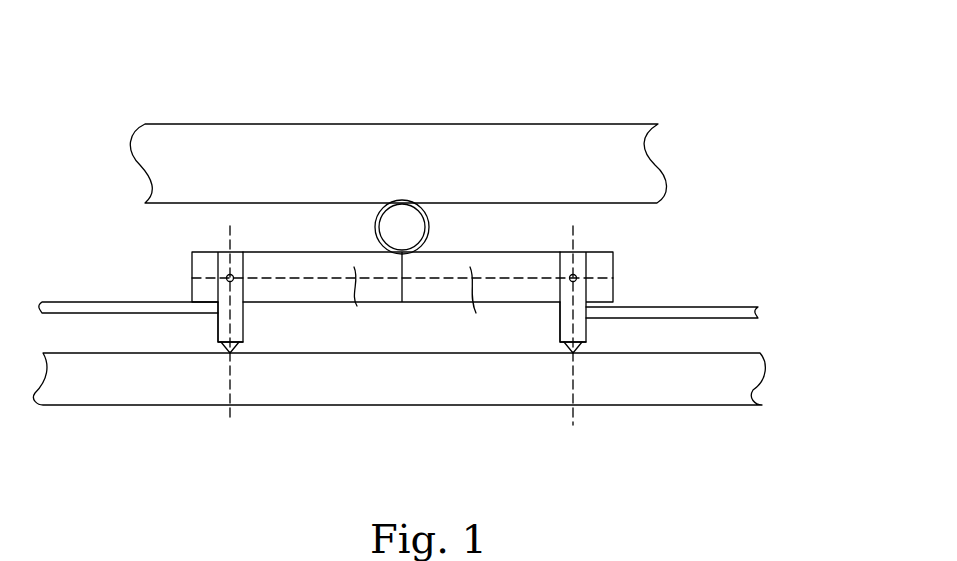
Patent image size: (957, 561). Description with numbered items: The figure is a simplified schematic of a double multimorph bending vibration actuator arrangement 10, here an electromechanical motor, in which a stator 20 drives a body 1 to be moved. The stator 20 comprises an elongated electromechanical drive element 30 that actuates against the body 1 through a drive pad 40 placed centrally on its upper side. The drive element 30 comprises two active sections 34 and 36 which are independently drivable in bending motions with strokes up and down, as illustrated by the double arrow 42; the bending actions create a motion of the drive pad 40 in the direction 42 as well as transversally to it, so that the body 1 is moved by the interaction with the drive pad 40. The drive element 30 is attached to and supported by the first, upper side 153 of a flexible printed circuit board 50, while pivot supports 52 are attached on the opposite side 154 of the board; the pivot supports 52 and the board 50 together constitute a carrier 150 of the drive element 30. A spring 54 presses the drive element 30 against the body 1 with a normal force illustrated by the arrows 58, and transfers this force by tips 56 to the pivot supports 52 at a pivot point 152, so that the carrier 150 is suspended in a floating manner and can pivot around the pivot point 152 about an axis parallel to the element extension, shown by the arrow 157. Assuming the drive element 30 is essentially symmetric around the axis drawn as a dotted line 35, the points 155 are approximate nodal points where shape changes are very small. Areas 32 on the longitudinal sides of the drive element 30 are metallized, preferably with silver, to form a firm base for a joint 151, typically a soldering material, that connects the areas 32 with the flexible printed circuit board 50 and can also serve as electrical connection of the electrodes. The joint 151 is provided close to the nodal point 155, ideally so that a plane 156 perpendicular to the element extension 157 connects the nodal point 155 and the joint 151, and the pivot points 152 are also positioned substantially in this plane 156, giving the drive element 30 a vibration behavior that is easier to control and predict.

The body to be moved 1 is at (583, 145).
The double multimorph bending vibration actuator arrangement 10 is at (240, 86).
The stator 20 is at (748, 277).
The electromechanical drive element 30 is at (612, 258).
The metallized areas 32 is at (222, 262).
The active section 34 is at (480, 309).
The symmetry axis 35 is at (192, 278).
The active section 36 is at (367, 307).
The drive pad 40 is at (427, 230).
The bending stroke direction 42 is at (348, 219).
The flexible printed circuit board 50 is at (103, 303).
The pivot supports 52 is at (230, 330).
The spring 54 is at (687, 393).
The spring tips 56 is at (233, 353).
The normal force arrows 58 is at (400, 97).
The carrier 150 is at (183, 323).
The joint 151 is at (230, 300).
The pivot point 152 is at (222, 346).
The first side of flexible printed circuit board 153 is at (53, 300).
The opposite side of flexible printed circuit board 154 is at (77, 317).
The nodal points 155 is at (232, 274).
The plane 156 is at (230, 422).
The element extension direction 157 is at (324, 321).